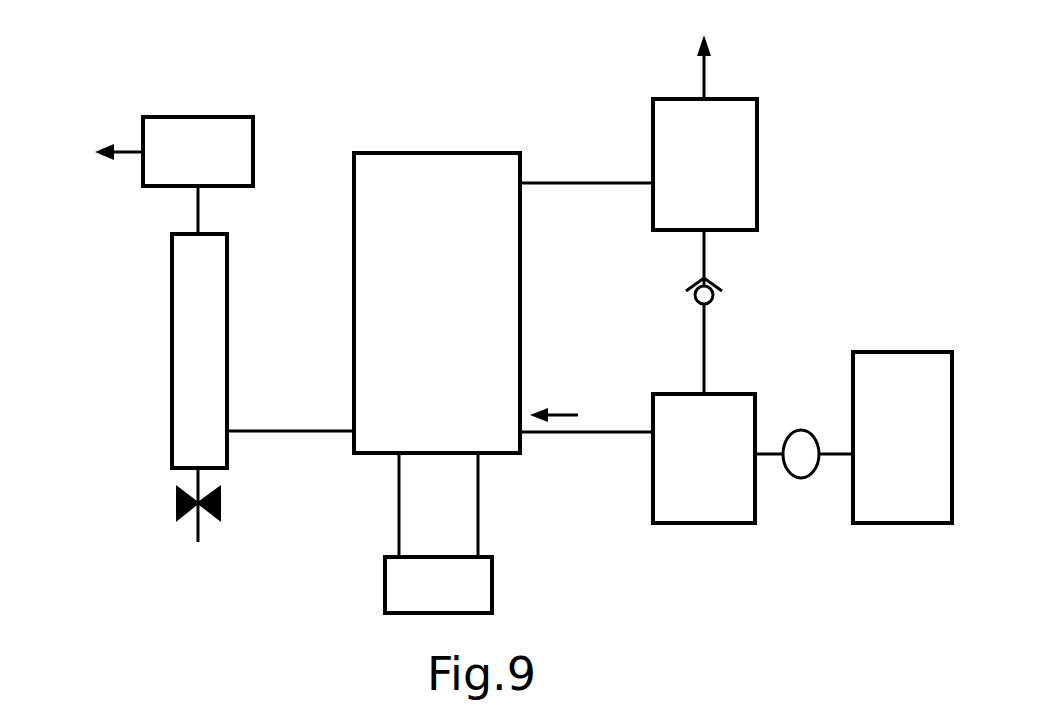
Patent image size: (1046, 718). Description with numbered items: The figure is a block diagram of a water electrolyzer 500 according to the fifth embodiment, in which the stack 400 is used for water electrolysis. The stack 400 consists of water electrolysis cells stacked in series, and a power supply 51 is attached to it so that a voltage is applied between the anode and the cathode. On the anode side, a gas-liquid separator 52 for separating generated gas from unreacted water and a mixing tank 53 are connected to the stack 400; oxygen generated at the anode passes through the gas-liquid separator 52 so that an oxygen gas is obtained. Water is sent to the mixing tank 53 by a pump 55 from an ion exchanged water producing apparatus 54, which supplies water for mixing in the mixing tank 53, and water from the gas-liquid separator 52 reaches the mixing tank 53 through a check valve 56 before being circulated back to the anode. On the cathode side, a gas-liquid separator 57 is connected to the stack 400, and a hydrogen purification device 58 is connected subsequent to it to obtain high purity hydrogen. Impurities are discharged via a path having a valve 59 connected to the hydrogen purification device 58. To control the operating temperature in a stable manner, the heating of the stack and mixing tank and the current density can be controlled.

The water electrolyzer 500 is at (75, 14).
The stack 400 is at (503, 303).
The power supply 51 is at (438, 533).
The gas-liquid separator 52 is at (704, 458).
The mixing tank 53 is at (705, 119).
The ion exchanged water producing apparatus 54 is at (902, 437).
The pump 55 is at (802, 479).
The check valve 56 is at (730, 292).
The gas-liquid separator 57 is at (162, 151).
The hydrogen purification device 58 is at (263, 327).
The valve 59 is at (226, 506).